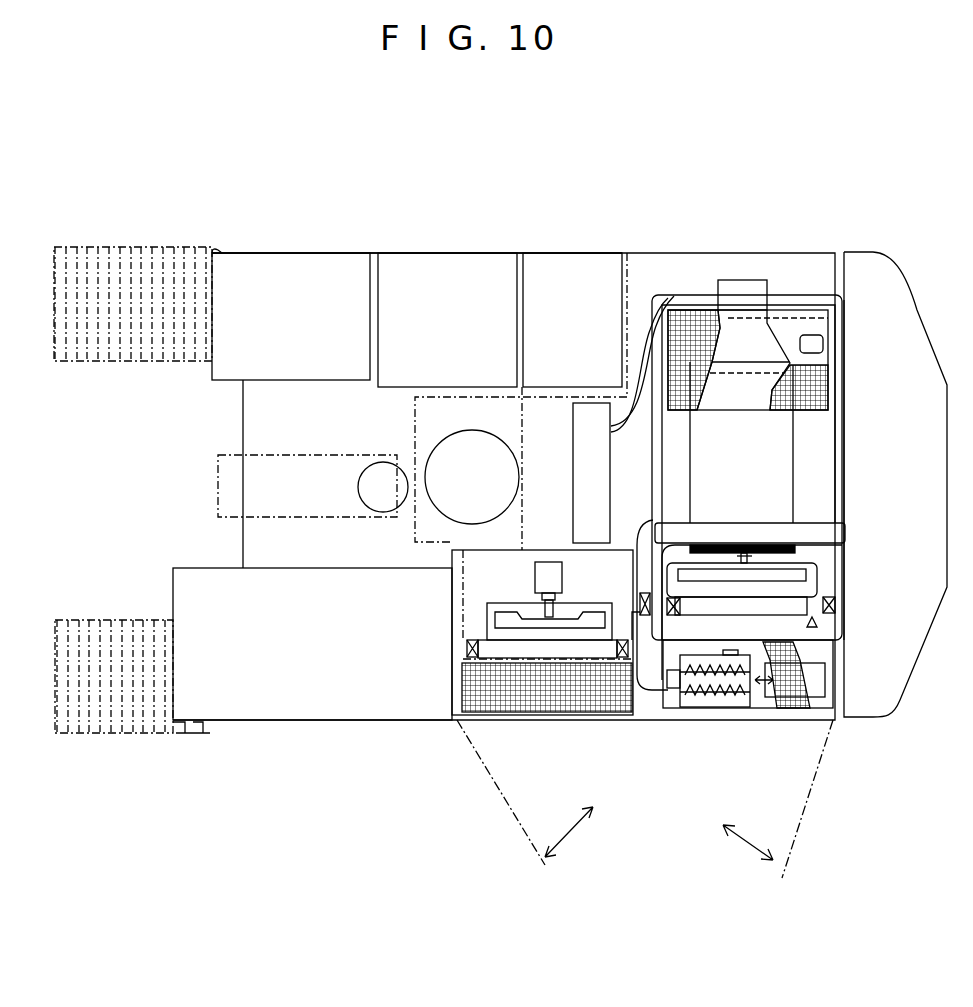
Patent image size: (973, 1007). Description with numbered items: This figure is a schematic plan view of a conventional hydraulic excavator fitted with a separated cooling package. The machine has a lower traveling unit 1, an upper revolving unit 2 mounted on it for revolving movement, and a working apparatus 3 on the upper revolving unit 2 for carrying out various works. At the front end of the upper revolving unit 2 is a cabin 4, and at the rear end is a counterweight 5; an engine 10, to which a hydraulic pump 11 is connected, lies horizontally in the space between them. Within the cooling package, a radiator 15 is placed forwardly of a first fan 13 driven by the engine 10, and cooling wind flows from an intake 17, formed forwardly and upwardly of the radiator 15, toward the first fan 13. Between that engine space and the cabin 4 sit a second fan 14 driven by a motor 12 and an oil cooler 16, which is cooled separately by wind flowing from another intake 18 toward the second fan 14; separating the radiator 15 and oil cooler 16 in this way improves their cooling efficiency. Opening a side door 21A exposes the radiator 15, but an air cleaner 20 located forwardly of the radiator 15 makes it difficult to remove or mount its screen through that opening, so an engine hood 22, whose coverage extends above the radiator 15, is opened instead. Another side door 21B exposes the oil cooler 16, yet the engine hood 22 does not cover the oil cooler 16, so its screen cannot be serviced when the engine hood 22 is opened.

The lower traveling unit 1 is at (163, 240).
The upper revolving unit 2 is at (456, 247).
The working apparatus 3 is at (227, 517).
The cabin 4 is at (203, 568).
The counterweight 5 is at (917, 308).
The engine 10 is at (795, 435).
The hydraulic pump 11 is at (742, 278).
The motor 12 is at (537, 580).
The first fan 13 is at (803, 572).
The second fan 14 is at (497, 620).
The radiator 15 is at (777, 608).
The oil cooler 16 is at (482, 648).
The intake 17 is at (782, 713).
The intake 18 is at (537, 713).
The air cleaner 20 is at (668, 713).
The side door 21A is at (810, 797).
The side door 21B is at (507, 810).
The engine hood 22 is at (845, 470).